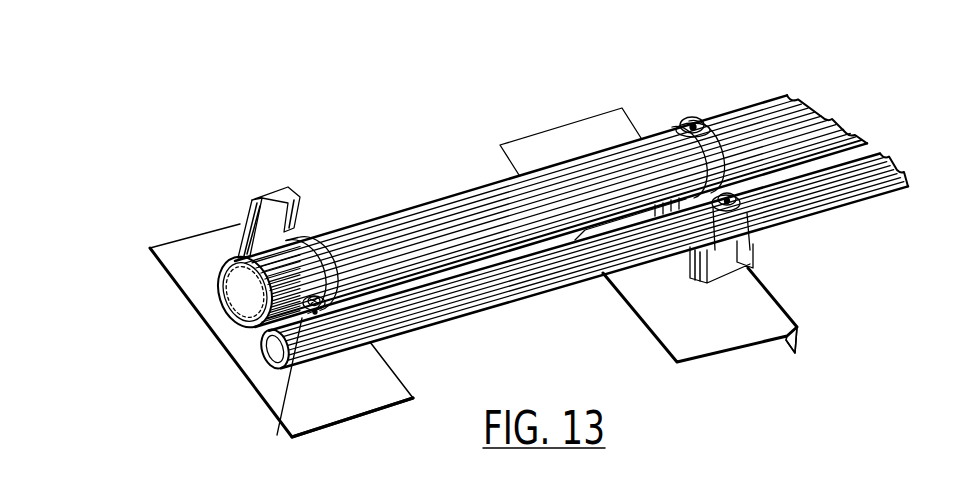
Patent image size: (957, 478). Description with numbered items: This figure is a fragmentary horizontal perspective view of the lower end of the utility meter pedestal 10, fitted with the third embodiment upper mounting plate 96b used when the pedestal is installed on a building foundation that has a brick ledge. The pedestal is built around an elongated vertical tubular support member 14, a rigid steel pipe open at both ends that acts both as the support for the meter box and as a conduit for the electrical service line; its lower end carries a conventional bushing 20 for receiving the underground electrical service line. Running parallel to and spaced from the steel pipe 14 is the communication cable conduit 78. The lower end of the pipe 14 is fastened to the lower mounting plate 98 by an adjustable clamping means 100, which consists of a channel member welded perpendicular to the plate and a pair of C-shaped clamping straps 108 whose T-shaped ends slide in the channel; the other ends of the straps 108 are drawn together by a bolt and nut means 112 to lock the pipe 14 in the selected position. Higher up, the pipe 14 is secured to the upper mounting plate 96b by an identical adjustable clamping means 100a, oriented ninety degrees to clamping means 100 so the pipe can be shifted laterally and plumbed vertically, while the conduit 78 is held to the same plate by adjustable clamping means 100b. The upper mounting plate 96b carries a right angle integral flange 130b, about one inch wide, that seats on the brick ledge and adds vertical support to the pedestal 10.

The utility meter pedestal 10 is at (948, 276).
The elongated vertical tubular support member 14 is at (515, 195).
The bushing 20 is at (250, 328).
The communication cable conduit 78 is at (515, 282).
The upper mounting plate 96b is at (690, 320).
The lower mounting plate 98 is at (378, 392).
The adjustable clamping means 100 is at (263, 180).
The adjustable clamping means 100a is at (666, 114).
The adjustable clamping means 100b is at (762, 244).
The C-shaped clamping straps 108 is at (283, 246).
The bolt and nut means 112 is at (277, 435).
The integral flange 130b is at (791, 354).